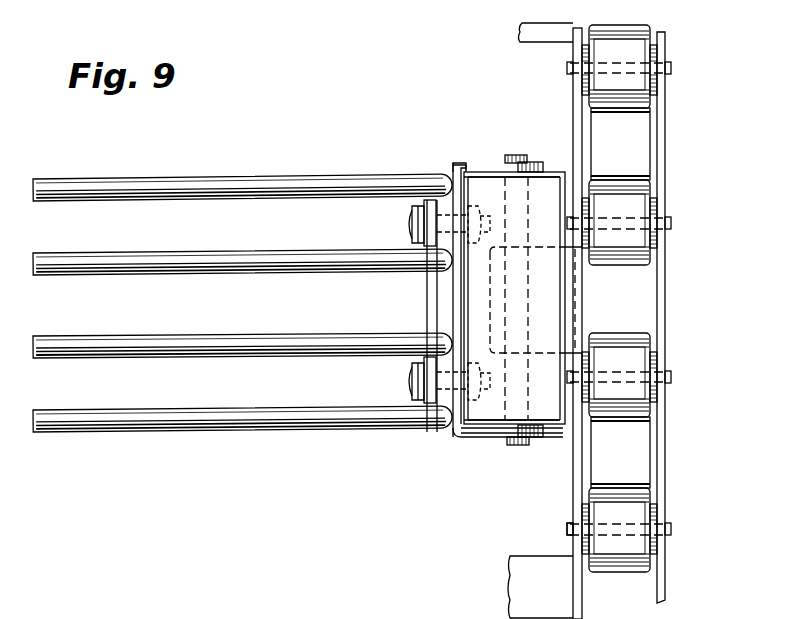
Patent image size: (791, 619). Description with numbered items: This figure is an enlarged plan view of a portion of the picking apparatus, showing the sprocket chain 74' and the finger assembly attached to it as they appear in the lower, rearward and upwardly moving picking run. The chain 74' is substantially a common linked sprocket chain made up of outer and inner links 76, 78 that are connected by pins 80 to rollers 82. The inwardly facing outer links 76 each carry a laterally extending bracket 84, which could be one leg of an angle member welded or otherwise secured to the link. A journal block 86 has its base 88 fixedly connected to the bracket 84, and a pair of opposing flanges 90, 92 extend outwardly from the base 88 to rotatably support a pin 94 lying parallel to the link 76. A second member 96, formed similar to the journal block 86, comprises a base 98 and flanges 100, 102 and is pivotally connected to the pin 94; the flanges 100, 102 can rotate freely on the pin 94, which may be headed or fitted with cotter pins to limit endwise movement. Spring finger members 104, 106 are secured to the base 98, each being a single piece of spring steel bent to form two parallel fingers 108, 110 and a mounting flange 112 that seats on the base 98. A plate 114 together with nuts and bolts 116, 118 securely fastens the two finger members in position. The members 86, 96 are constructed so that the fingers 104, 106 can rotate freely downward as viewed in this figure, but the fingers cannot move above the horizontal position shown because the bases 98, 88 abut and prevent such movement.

The sprocket chain 74' is at (711, 414).
The outer links 76 is at (572, 58).
The inner links 78 is at (592, 152).
The pins 80 is at (567, 529).
The rollers 82 is at (617, 487).
The bracket 84 is at (530, 33).
The journal block 86 is at (562, 172).
The base 88 is at (544, 217).
The flange 90 is at (560, 426).
The flange 92 is at (542, 172).
The pin 94 is at (515, 160).
The second member 96 is at (459, 440).
The base 98 is at (460, 166).
The flange 100 is at (488, 440).
The flange 102 is at (484, 171).
The spring finger member 104 is at (266, 433).
The spring finger member 106 is at (249, 171).
The finger 108 is at (265, 251).
The finger 110 is at (286, 178).
The mounting flange 112 is at (452, 170).
The plate 114 is at (437, 305).
The nuts and bolts 116 is at (524, 396).
The nuts and bolts 118 is at (410, 231).